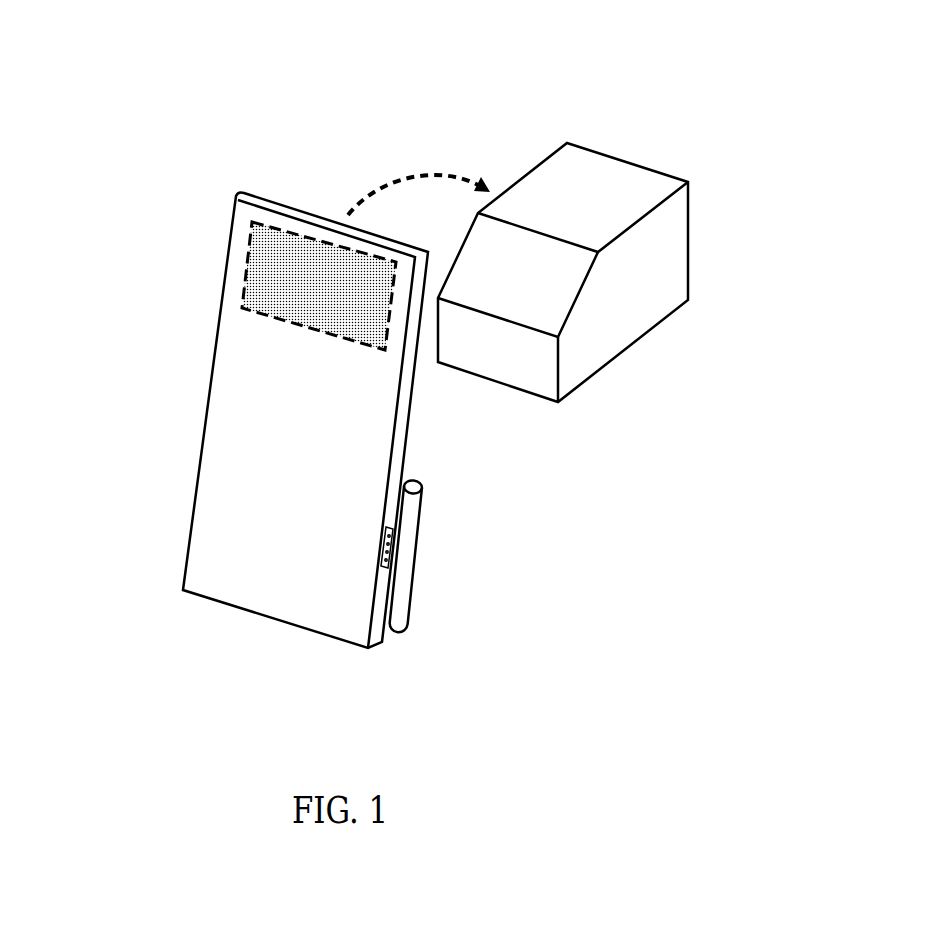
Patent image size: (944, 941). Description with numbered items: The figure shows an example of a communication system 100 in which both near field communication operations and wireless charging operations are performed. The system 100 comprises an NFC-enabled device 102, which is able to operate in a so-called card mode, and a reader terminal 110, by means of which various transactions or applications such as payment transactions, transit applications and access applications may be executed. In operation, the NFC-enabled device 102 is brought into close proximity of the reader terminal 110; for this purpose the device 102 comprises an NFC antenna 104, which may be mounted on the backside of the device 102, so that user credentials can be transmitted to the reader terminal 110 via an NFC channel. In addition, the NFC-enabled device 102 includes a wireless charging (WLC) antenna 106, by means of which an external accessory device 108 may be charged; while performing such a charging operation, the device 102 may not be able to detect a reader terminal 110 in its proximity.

The communication system 100 is at (143, 101).
The NFC-enabled device 102 is at (205, 387).
The NFC antenna 104 is at (247, 268).
The wireless charging (WLC) antenna 106 is at (380, 569).
The accessory device 108 is at (552, 569).
The reader terminal 110 is at (533, 165).